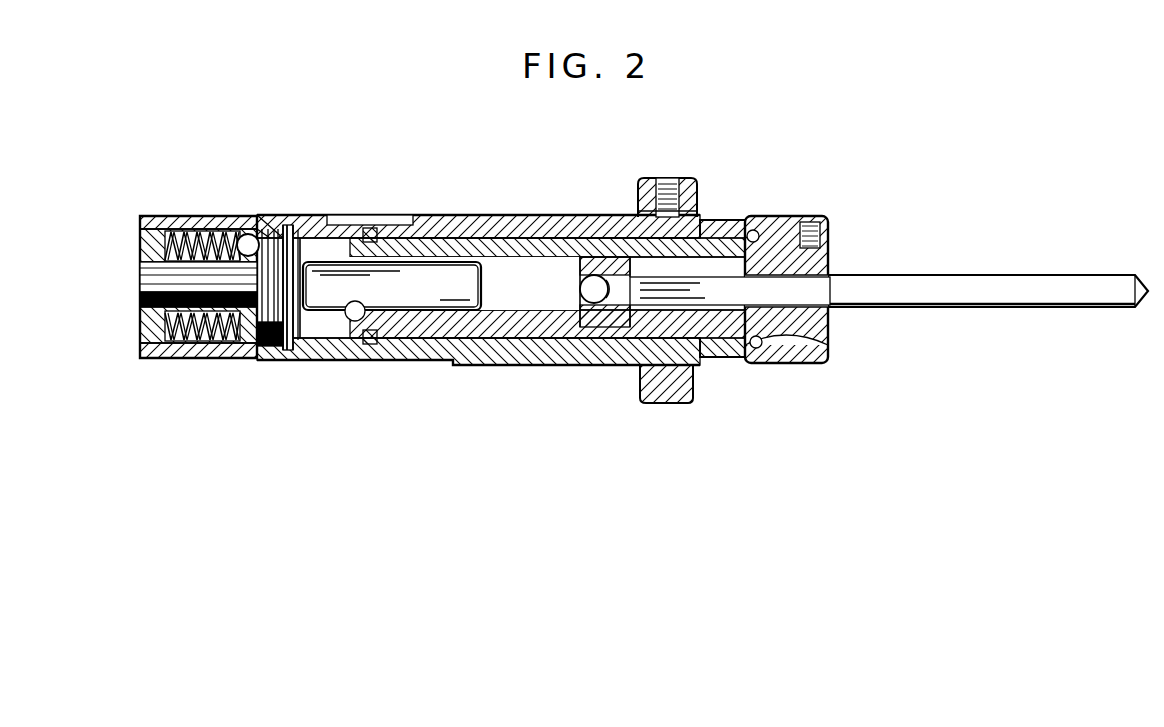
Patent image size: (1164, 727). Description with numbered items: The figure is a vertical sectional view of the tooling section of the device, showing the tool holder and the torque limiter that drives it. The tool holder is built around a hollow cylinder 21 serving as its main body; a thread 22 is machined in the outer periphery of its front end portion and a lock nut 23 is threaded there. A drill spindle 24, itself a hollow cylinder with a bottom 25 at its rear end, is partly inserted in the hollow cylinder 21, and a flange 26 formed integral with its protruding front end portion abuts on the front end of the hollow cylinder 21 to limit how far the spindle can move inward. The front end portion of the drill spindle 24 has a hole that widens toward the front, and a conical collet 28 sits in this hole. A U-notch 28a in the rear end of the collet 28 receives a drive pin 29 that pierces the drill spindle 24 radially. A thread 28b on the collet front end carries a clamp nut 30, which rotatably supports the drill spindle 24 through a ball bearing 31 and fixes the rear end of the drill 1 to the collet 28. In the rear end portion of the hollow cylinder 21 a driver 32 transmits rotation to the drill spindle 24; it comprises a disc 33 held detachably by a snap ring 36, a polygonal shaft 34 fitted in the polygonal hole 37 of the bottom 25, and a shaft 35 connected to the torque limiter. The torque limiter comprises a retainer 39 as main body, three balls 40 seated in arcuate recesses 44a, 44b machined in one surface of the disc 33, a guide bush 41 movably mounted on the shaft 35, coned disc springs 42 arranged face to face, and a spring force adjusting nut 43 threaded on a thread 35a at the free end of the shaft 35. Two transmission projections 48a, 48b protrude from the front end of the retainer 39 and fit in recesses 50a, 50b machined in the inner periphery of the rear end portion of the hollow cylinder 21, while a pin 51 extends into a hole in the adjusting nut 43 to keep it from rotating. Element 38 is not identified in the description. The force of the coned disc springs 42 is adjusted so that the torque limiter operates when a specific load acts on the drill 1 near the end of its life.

The drill 1 is at (1000, 276).
The hollow cylinder 21 is at (505, 242).
The thread 22 is at (546, 218).
The lock nut 23 is at (645, 182).
The drill spindle 24 is at (455, 232).
The bottom 25 is at (352, 257).
The flange 26 is at (705, 366).
The conical collet 28 is at (830, 320).
The U-notch 28a is at (602, 306).
The thread 28b is at (805, 238).
The drive pin 29 is at (585, 298).
The clamp nut 30 is at (812, 364).
The ball bearing 31 is at (749, 365).
The driver 32 is at (408, 301).
The disc 33 is at (288, 230).
The polygonal shaft 34 is at (481, 285).
The shaft 35 is at (185, 233).
The thread 35a is at (142, 275).
The snap ring 36 is at (300, 340).
The polygonal hole 37 is at (347, 313).
The cap plate 38 is at (160, 216).
The retainer 39 is at (207, 230).
The balls 40 is at (244, 237).
The guide bush 41 is at (205, 350).
The coned disc springs 42 is at (168, 358).
The spring force adjusting nut 43 is at (140, 320).
The arcuate recess 44a is at (267, 222).
The arcuate recess 44b is at (272, 350).
The transmission projection 48a is at (265, 228).
The transmission projection 48b is at (252, 352).
The recess 50a is at (276, 232).
The recess 50b is at (264, 352).
The pin 51 is at (140, 237).